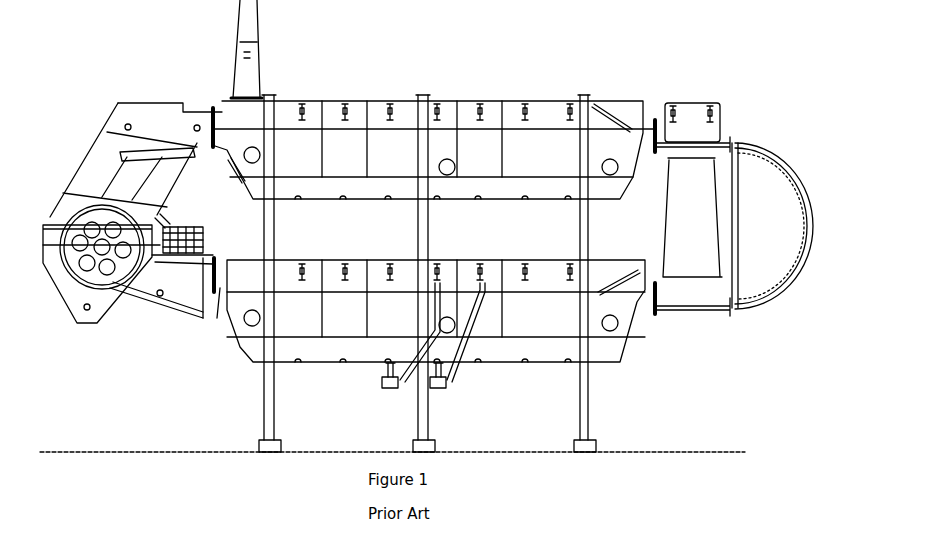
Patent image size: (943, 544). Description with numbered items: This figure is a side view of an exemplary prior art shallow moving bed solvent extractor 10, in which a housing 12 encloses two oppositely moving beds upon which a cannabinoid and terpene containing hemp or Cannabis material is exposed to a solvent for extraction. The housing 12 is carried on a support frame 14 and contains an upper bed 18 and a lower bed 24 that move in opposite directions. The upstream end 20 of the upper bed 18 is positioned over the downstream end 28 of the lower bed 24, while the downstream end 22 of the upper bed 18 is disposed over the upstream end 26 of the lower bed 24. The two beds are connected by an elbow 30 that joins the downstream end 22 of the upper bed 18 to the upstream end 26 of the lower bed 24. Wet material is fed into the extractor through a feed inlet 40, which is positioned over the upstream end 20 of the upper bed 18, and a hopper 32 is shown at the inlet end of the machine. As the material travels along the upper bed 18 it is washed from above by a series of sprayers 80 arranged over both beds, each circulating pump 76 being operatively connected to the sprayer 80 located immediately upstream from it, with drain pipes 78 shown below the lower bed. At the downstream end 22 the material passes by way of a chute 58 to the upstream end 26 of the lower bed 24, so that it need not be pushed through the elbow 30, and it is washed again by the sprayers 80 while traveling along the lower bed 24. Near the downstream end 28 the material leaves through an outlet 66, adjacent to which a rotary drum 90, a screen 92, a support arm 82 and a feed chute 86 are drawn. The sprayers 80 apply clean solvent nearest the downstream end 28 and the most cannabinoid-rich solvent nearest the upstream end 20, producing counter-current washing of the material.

The asphalt plant system 10 is at (104, 41).
The housing 12 is at (381, 100).
The support frame 14 is at (430, 221).
The upper bed 18 is at (514, 103).
The upstream end of the upper bed 20 is at (214, 108).
The downstream end of the upper bed 22 is at (653, 118).
The lower bed 24 is at (510, 270).
The upstream end of the lower bed 26 is at (648, 306).
The downstream end of the lower bed 28 is at (214, 295).
The elbow 30 is at (795, 178).
The feed hopper 32 is at (96, 170).
The feed inlet 40 is at (243, 50).
The chute 58 is at (686, 212).
The outlet 66 is at (87, 325).
The circulating pump 76 is at (388, 203).
The drain pipes 78 is at (388, 389).
The sprayer 80 is at (345, 104).
The support arm 82 is at (178, 303).
The feed chute 86 is at (170, 214).
The rotary drum 90 is at (62, 272).
The screen 92 is at (204, 249).